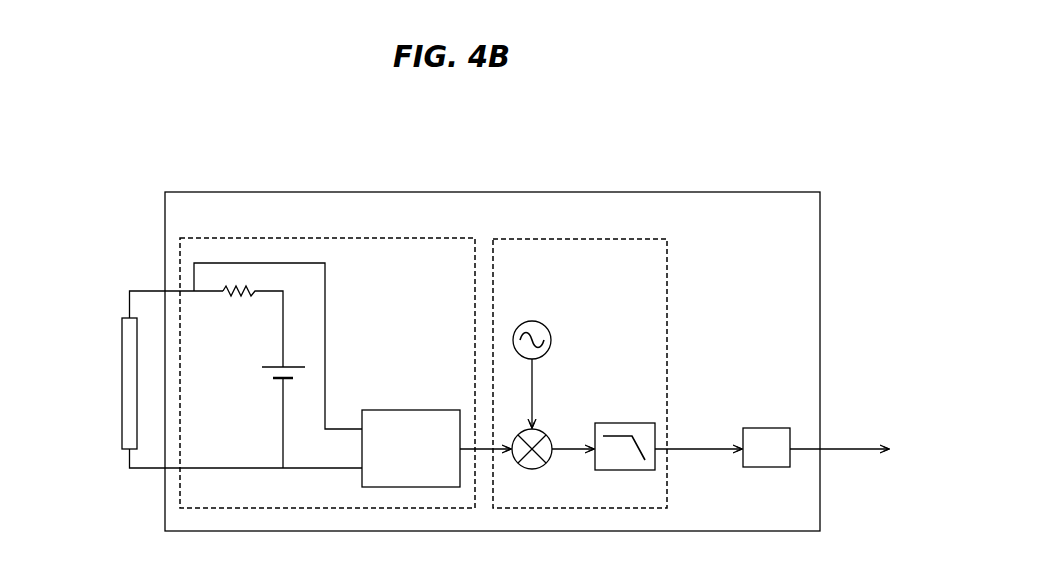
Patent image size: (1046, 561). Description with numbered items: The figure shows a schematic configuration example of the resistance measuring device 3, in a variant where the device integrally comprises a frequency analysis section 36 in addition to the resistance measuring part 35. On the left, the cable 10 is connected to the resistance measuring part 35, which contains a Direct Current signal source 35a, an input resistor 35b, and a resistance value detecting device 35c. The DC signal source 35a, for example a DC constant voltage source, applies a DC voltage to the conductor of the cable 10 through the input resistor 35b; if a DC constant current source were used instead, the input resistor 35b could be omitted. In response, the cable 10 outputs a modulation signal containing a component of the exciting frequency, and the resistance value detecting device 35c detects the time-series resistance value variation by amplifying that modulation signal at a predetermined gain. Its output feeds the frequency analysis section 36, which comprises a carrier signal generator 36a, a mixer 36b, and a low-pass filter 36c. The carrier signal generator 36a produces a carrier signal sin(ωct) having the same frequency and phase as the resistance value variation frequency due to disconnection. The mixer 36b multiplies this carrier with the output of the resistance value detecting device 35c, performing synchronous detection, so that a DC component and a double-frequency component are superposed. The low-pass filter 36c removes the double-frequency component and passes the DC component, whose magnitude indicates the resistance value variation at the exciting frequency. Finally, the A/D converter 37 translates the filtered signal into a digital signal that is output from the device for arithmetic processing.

The resistance measuring device 3 is at (164, 190).
The cable 10 is at (122, 378).
The resistance measuring part 35 is at (461, 238).
The Direct Current signal source 35a is at (266, 373).
The input resistor 35b is at (233, 295).
The resistance value detecting device 35c is at (409, 410).
The frequency analysis section 36 is at (659, 239).
The carrier signal generator 36a is at (546, 321).
The mixer 36b is at (537, 469).
The low-pass filter 36c is at (648, 470).
The A/D converter 37 is at (772, 467).